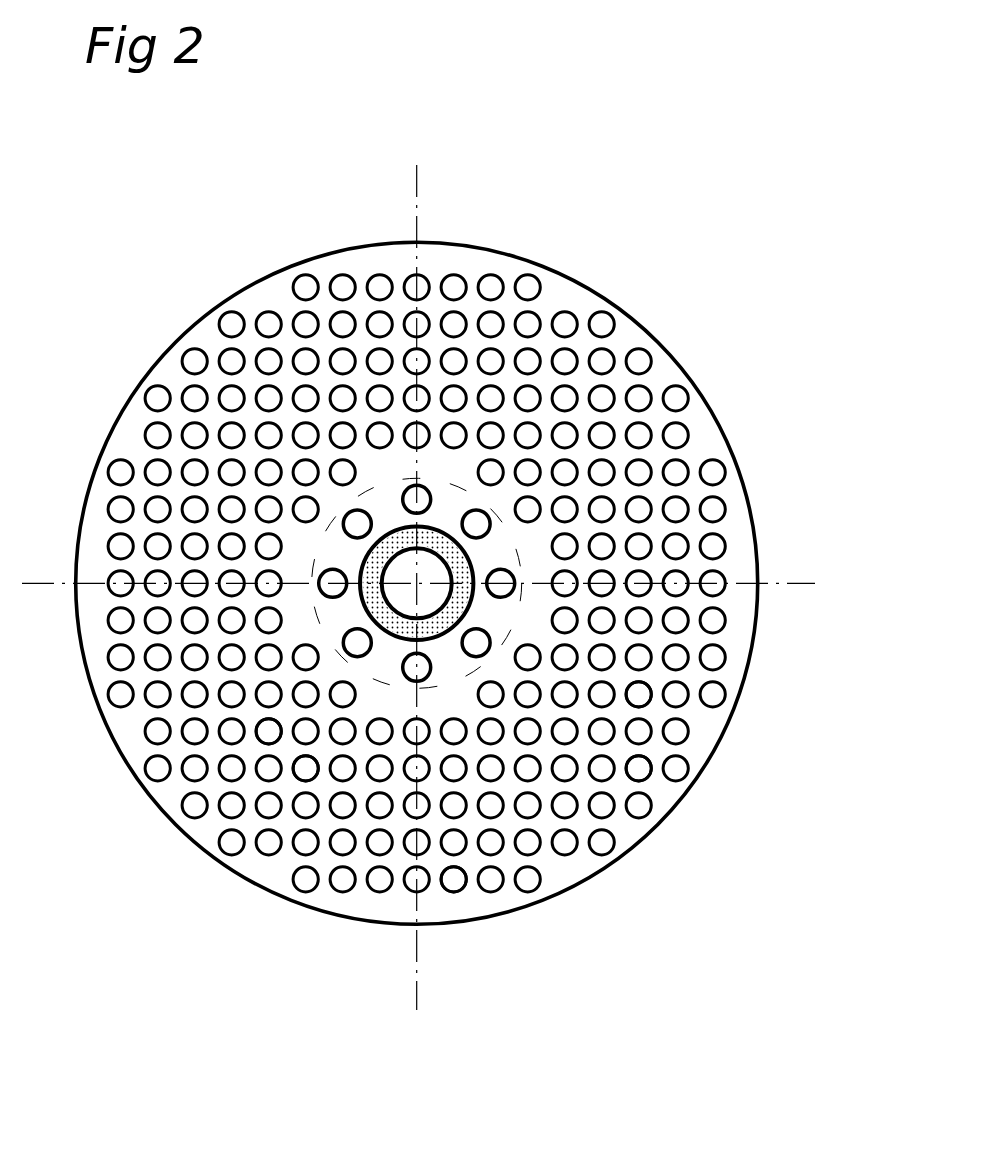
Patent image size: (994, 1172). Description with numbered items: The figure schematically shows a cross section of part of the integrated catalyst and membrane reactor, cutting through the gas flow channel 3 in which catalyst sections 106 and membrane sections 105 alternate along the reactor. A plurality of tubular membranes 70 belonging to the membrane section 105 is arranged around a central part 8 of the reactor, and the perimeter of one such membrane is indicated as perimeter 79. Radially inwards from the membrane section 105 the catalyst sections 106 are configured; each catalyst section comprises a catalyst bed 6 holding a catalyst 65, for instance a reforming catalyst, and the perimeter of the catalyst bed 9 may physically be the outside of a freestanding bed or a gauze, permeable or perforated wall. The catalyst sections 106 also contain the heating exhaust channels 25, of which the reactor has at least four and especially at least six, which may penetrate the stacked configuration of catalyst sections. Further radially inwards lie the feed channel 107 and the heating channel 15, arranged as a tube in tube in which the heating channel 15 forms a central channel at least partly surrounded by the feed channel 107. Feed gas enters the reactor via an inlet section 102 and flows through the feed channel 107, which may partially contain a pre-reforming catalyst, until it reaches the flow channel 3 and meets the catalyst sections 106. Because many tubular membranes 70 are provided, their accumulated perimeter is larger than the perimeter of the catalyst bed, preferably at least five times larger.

The gas flow channel 3 is at (175, 674).
The catalyst bed 6 is at (382, 508).
The central part 8 is at (447, 660).
The perimeter of the catalyst bed 9 is at (500, 655).
The heating channel 15 is at (425, 572).
The heating exhaust channels 25 is at (500, 512).
The catalyst 65 is at (500, 618).
The tubular gas membranes 70 is at (640, 700).
The perimeter of a membrane 79 is at (460, 893).
The inlet section 102 is at (373, 565).
The membrane section 105 is at (620, 785).
The catalyst sections 106 is at (503, 555).
The feed channel 107 is at (405, 633).